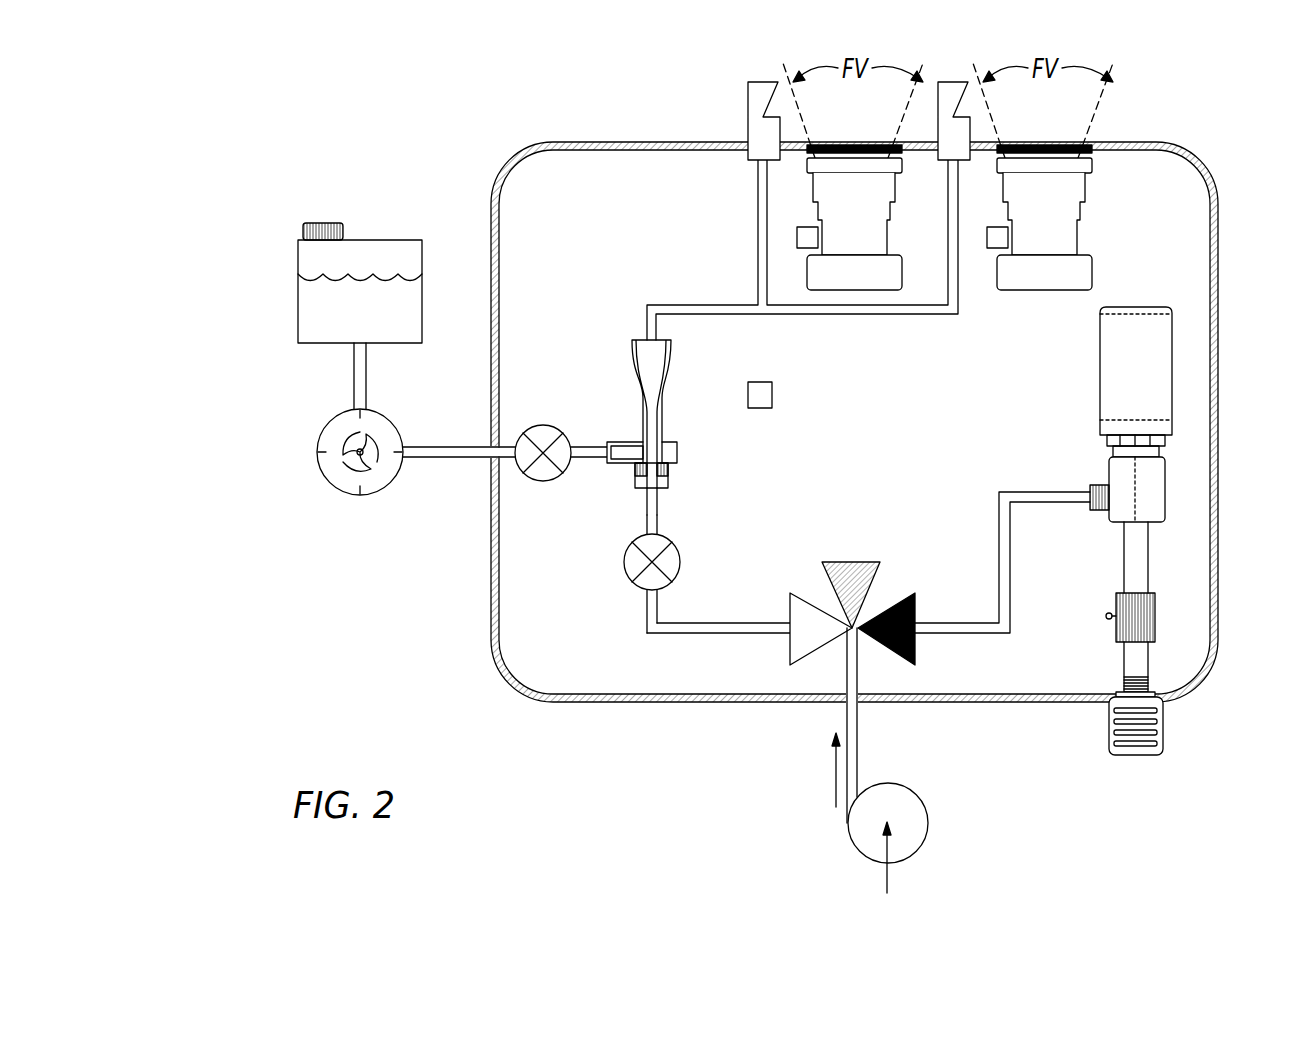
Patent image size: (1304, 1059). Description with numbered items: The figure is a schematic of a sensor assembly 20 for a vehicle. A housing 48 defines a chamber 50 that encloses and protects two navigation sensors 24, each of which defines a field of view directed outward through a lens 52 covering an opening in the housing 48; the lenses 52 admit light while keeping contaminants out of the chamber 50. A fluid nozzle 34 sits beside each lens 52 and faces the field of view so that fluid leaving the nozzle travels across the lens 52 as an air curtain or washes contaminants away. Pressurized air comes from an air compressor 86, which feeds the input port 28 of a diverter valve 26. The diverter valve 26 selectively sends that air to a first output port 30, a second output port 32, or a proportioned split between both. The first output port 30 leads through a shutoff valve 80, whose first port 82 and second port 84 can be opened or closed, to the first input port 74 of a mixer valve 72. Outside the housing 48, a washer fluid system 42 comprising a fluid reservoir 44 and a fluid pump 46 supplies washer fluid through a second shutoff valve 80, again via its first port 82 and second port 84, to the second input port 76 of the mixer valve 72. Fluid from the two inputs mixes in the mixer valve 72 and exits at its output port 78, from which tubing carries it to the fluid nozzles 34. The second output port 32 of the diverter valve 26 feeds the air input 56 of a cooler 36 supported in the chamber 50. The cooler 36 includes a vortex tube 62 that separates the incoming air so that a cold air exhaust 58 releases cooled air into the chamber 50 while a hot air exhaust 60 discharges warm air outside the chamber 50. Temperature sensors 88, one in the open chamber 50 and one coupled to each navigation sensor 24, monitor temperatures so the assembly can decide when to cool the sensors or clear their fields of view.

The sensor assembly 20 is at (641, 112).
The navigation sensor 24 is at (878, 238).
The diverter valve 26 is at (851, 659).
The input port 28 is at (857, 637).
The first output port 30 is at (787, 635).
The second output port 32 is at (917, 633).
The fluid nozzle 34 is at (758, 82).
The cooler 36 is at (1152, 480).
The washer fluid system 42 is at (238, 381).
The fluid reservoir 44 is at (298, 290).
The fluid pump 46 is at (333, 487).
The housing 48 is at (1218, 273).
The chamber 50 is at (869, 441).
The lens 52 is at (862, 148).
The air input 56 is at (1090, 504).
The cold air exhaust 58 is at (1112, 350).
The hot air exhaust 60 is at (1163, 733).
The vortex tube 62 is at (1152, 510).
The mixer valve 72 is at (622, 468).
The first input port 74 is at (645, 502).
The second input port 76 is at (605, 442).
The output port 78 is at (645, 338).
The shutoff valve 80 is at (543, 481).
The first port 82 is at (512, 440).
The second port 84 is at (577, 458).
The air compressor 86 is at (852, 843).
The temperature sensor 88 is at (795, 230).